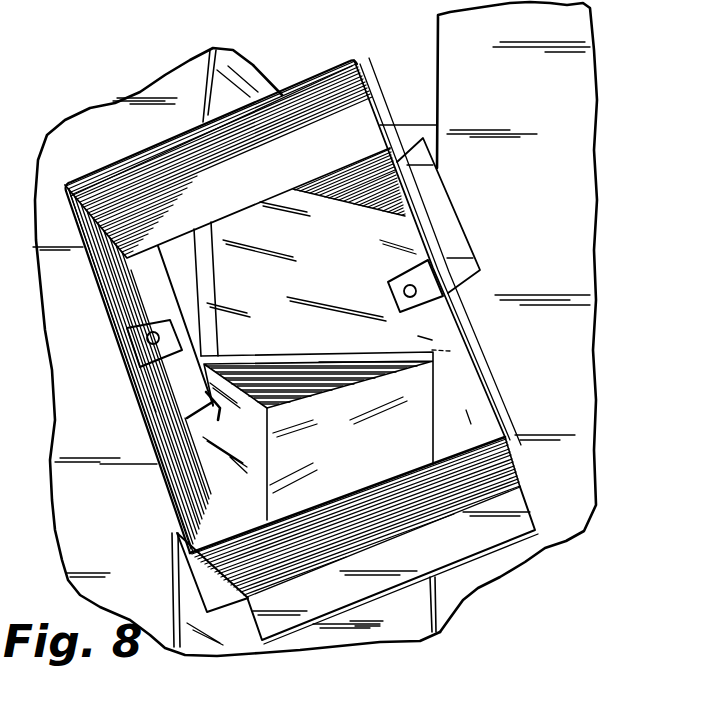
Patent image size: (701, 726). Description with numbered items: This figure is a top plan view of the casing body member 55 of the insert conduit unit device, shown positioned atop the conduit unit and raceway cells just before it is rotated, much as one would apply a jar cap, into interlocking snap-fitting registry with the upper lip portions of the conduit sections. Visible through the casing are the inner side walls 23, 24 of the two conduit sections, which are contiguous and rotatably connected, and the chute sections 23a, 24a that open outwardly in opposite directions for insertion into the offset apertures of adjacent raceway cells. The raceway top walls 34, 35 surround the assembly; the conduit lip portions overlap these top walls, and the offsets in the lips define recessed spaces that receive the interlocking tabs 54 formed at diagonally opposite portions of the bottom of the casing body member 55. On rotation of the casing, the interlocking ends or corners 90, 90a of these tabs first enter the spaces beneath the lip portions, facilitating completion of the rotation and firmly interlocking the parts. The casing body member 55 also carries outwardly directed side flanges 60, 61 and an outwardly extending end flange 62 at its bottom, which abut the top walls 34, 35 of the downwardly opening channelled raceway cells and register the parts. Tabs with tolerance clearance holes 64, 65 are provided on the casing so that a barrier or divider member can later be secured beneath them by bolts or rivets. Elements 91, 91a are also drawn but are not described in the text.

The inner side wall 23 is at (293, 363).
The chute section 23a is at (367, 464).
The inner side wall 24 is at (267, 357).
The chute section 24a is at (356, 254).
The raceway top wall 34 is at (102, 501).
The raceway top wall 35 is at (540, 177).
The interlocking tab 54 is at (180, 242).
The casing body member 55 is at (180, 507).
The side flange 60 is at (440, 213).
The side flange 61 is at (200, 590).
The end flange 62 is at (440, 557).
The tolerance clearance hole 64 is at (150, 345).
The tolerance clearance hole 65 is at (388, 290).
The interlocking tab end 90 is at (218, 420).
The interlocking tab end 90a is at (418, 336).
The sealing strip 91 is at (153, 402).
The sealing strip 91a is at (467, 413).